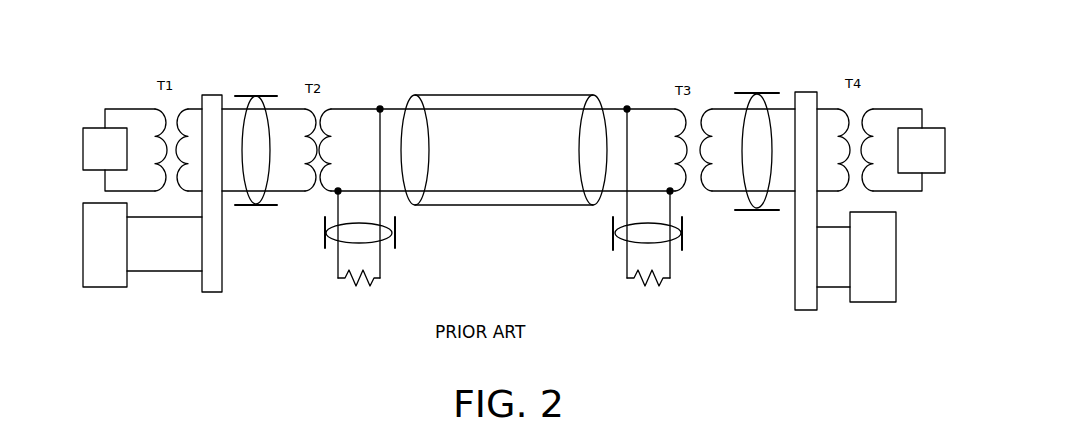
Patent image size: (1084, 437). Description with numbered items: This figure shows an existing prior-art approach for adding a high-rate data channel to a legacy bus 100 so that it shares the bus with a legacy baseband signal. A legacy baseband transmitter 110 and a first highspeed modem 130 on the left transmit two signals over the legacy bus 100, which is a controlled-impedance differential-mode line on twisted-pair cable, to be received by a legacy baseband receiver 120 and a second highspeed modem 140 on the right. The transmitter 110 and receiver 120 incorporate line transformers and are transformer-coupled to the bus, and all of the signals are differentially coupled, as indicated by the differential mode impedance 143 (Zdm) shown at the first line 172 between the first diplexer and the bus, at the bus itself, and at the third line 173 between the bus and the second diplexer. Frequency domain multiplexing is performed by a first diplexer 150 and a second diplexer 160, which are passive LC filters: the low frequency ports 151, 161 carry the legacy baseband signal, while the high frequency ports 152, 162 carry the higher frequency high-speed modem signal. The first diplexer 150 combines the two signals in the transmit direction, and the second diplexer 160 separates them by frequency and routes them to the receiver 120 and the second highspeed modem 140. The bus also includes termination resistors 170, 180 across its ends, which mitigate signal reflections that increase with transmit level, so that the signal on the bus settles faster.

The legacy bus 100 is at (613, 108).
The transmitter 110 is at (83, 130).
The receiver 120 is at (935, 128).
The first highspeed modem 130 is at (83, 286).
The second highspeed modem 140 is at (877, 303).
The differential mode impedance 143 is at (280, 238).
The diplexer 150 is at (239, 164).
The low frequency port 151 is at (211, 127).
The high frequency port 152 is at (218, 245).
The second diplexer 160 is at (824, 172).
The low frequency port 161 is at (822, 127).
The high frequency port 162 is at (797, 258).
The termination resistor 170 is at (340, 283).
The line L1 172 is at (262, 95).
The line L3 173 is at (735, 92).
The termination resistor 180 is at (660, 283).